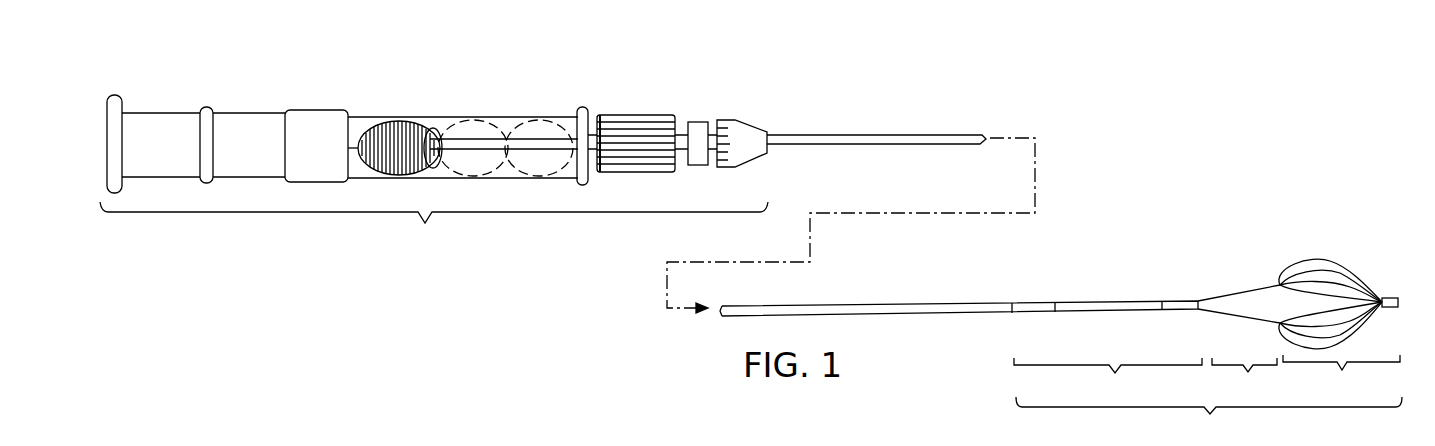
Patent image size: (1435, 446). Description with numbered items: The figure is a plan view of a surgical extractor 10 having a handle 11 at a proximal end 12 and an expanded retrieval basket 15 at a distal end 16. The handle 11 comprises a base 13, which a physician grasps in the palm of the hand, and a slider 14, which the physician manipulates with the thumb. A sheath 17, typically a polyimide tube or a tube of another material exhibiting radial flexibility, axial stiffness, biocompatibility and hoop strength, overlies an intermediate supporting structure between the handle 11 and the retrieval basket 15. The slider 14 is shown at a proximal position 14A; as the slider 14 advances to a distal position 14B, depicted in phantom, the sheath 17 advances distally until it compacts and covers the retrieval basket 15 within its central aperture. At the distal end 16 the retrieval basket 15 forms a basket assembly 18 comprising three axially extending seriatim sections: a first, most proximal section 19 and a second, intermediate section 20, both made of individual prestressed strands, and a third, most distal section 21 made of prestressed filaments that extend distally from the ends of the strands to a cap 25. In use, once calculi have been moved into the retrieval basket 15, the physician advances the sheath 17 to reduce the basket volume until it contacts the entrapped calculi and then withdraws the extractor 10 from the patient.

The surgical extractor 10 is at (846, 126).
The handle 11 is at (420, 111).
The proximal end 12 is at (434, 226).
The base 13 is at (157, 113).
The slider 14 is at (407, 180).
The proximal position 14A is at (497, 170).
The distal position 14B is at (568, 168).
The retrieval basket 15 is at (1337, 265).
The distal end 16 is at (1209, 291).
The sheath 17 is at (878, 145).
The basket assembly 18 is at (1061, 370).
The first section 19 is at (1108, 376).
The second section 20 is at (1244, 377).
The third section 21 is at (1341, 374).
The cap 25 is at (1390, 307).